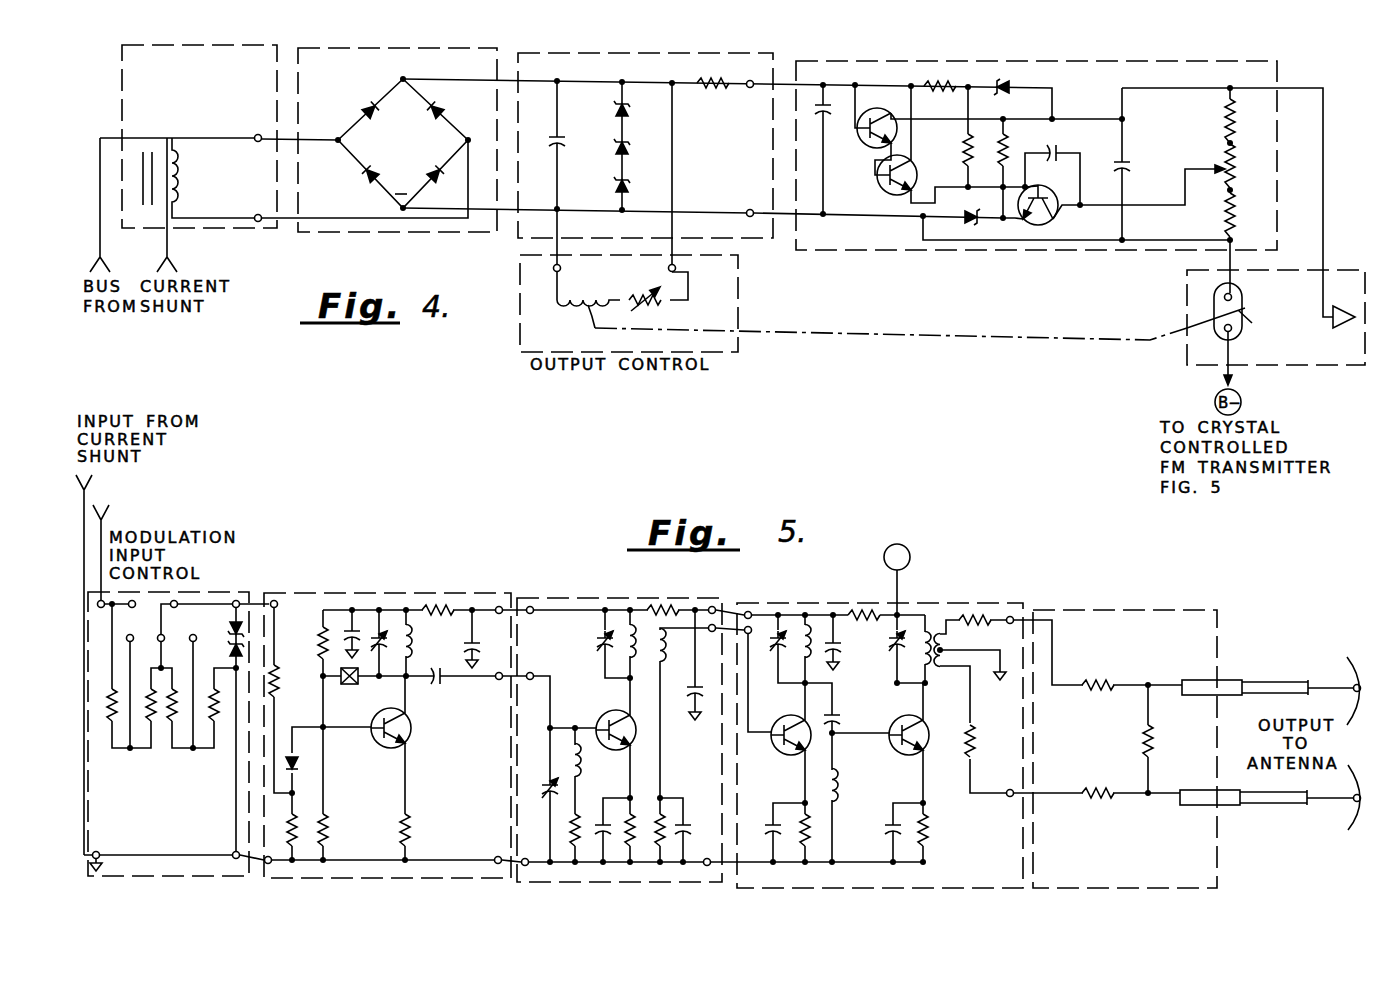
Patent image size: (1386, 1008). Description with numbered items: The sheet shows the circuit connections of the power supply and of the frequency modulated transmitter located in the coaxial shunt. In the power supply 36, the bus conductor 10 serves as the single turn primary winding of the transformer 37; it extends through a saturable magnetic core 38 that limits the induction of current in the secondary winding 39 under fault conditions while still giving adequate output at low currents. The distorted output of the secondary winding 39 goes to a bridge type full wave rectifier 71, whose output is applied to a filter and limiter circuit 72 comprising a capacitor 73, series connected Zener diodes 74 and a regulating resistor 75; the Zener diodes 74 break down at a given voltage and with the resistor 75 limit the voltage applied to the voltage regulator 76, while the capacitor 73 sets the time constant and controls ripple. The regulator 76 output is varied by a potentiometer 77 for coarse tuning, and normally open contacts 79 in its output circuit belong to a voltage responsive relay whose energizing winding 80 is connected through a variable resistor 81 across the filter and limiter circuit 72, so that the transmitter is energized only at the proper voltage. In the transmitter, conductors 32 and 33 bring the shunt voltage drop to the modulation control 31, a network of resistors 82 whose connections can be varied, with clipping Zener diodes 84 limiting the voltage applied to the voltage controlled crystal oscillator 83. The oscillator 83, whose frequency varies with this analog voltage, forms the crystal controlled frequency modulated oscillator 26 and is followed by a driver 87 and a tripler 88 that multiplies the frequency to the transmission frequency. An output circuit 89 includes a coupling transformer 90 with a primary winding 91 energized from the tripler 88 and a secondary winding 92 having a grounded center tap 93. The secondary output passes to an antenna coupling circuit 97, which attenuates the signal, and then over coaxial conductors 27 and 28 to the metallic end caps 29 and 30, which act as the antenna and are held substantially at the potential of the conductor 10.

In FIG. 4, the power supply 36 is at (250, 36).
In FIG. 4, the transformer 37 is at (190, 144).
In FIG. 4, the saturable magnetic core 38 is at (142, 152).
In FIG. 4, the secondary winding 39 is at (181, 190).
In FIG. 4, the conductor 10 is at (172, 249).
In FIG. 4, the full wave rectifier 71 is at (364, 84).
In FIG. 4, the filter and limiter circuit 72 is at (645, 145).
In FIG. 4, the capacitor 73 is at (566, 146).
In FIG. 4, the Zener diodes 74 is at (631, 185).
In FIG. 4, the regulating resistor 75 is at (712, 94).
In FIG. 4, the voltage regulator 76 is at (1075, 194).
In FIG. 4, the potentiometer 77 is at (1214, 162).
In FIG. 4, the normally open contacts 79 is at (1240, 322).
In FIG. 4, the energizing winding 80 is at (581, 297).
In FIG. 4, the variable resistor 81 is at (670, 306).
In FIG. 5, the conductor 33 is at (93, 489).
In FIG. 5, the conductor 32 is at (110, 517).
In FIG. 5, the modulation control 31 is at (181, 709).
In FIG. 5, the clipping Zener diodes 84 is at (230, 648).
In FIG. 5, the resistors 82 is at (149, 740).
In FIG. 5, the voltage controlled crystal oscillator 83 is at (468, 766).
In FIG. 5, the crystal controlled frequency modulated oscillator 26 is at (630, 708).
In FIG. 5, the driver 87 is at (702, 776).
In FIG. 5, the tripler 88 is at (880, 716).
In FIG. 5, the output circuit 89 is at (939, 776).
In FIG. 5, the coupling transformer 90 is at (913, 674).
In FIG. 5, the primary winding 91 is at (916, 641).
In FIG. 5, the secondary winding 92 is at (947, 649).
In FIG. 5, the center tap 93 is at (972, 704).
In FIG. 5, the antenna coupling circuit 97 is at (1154, 657).
In FIG. 5, the coaxial conductor 27 is at (1316, 686).
In FIG. 5, the coaxial conductor 28 is at (1311, 807).
In FIG. 5, the metallic end cap 29 is at (1352, 660).
In FIG. 5, the metallic end cap 30 is at (1348, 836).